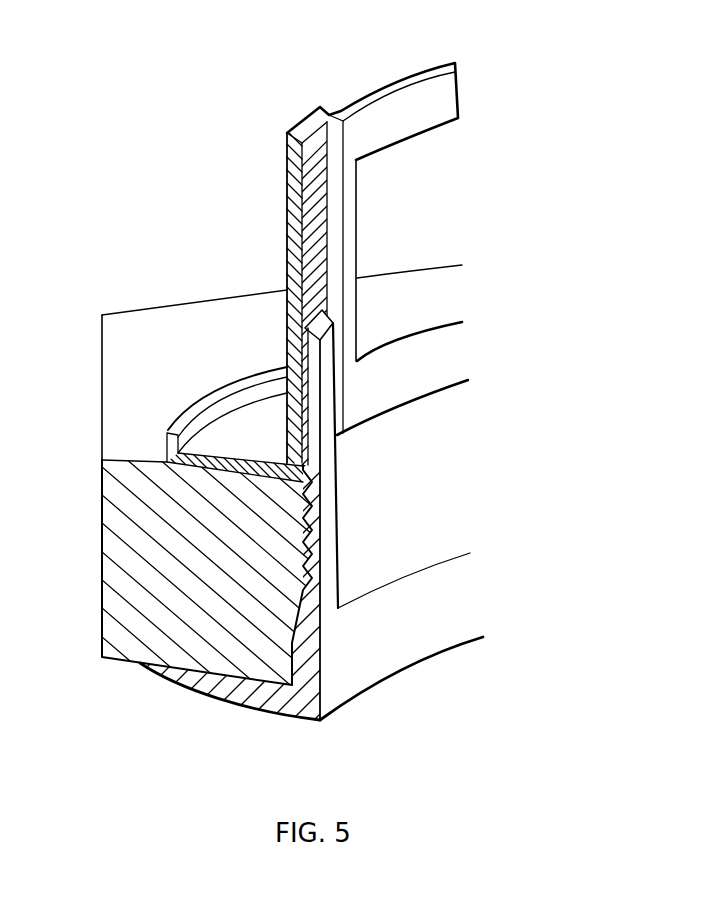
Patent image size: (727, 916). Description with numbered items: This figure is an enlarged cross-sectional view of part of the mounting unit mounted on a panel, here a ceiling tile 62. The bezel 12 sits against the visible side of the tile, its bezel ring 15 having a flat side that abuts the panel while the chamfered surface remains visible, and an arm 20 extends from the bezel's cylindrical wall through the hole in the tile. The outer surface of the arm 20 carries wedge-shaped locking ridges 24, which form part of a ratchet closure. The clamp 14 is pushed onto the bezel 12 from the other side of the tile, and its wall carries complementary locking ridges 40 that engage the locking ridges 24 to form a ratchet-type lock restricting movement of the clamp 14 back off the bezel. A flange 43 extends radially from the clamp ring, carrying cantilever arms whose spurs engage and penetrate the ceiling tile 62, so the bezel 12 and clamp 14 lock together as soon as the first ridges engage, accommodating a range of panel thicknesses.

The bezel 12 is at (373, 704).
The clamp 14 is at (380, 81).
The bezel ring 15 is at (187, 680).
The arm 20 is at (323, 350).
The locking ridges 24 is at (305, 400).
The locking ridges 40 is at (313, 233).
The flange 43 is at (222, 412).
The ceiling tile 62 is at (112, 512).